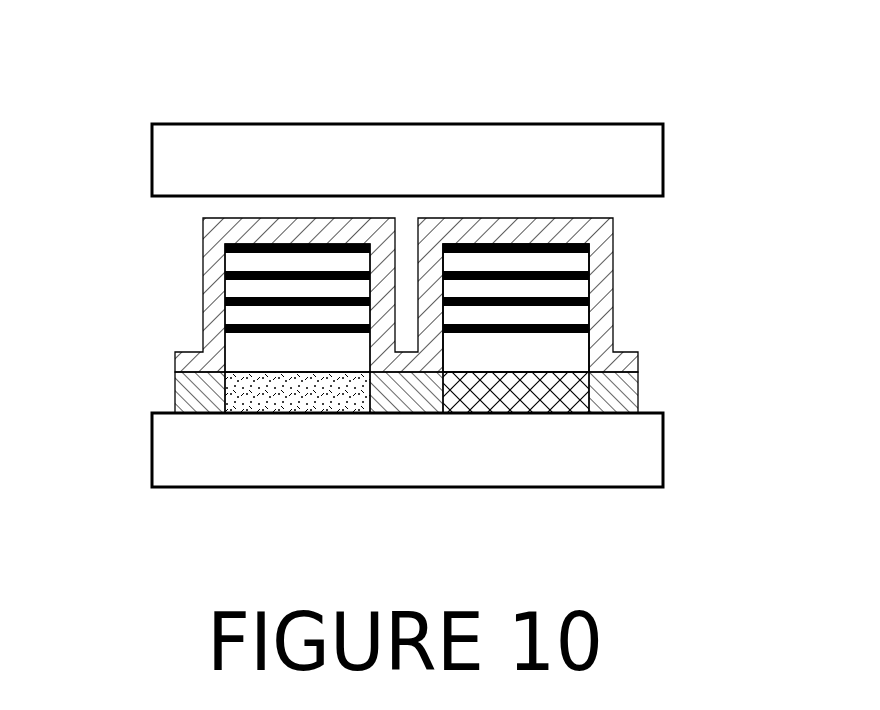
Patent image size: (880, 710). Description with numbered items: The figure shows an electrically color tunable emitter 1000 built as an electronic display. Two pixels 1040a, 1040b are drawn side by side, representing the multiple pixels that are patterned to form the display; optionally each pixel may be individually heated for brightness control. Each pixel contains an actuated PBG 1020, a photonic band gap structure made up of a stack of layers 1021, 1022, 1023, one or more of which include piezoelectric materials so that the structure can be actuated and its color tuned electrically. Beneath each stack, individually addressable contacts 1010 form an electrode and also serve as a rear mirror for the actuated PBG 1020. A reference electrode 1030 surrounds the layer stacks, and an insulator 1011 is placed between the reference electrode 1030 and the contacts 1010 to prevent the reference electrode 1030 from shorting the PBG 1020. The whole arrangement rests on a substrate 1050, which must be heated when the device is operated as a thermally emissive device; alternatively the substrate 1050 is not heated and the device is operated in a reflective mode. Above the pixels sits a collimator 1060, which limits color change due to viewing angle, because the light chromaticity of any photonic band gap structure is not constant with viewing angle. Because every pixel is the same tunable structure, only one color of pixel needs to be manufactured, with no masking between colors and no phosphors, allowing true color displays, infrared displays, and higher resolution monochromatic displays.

The electrically color tunable emitter 1000 is at (688, 528).
The individually addressable contacts 1010 is at (262, 404).
The insulator 1011 is at (177, 397).
The actuated PBG 1020 is at (645, 243).
The layer 1021 is at (218, 247).
The layer 1022 is at (217, 290).
The layer 1023 is at (215, 350).
The reference electrode 1030 is at (615, 230).
The pixel 1040a is at (175, 108).
The pixel 1040b is at (412, 108).
The substrate 1050 is at (363, 467).
The collimator 1060 is at (363, 177).